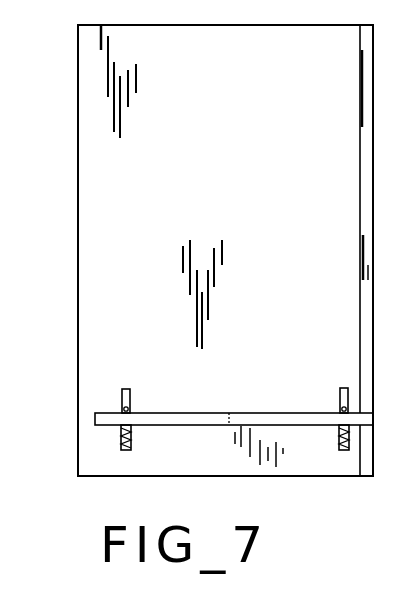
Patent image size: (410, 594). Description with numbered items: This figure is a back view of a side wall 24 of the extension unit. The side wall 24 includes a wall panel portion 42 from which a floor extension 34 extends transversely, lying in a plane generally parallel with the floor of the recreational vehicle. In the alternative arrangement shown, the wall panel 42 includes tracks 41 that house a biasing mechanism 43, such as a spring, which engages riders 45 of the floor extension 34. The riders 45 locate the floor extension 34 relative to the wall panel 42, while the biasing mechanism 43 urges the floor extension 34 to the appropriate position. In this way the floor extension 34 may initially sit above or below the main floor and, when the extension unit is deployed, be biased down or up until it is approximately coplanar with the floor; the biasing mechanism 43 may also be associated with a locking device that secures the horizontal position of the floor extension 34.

The side wall 24 is at (88, 188).
The wall panel portion 42 is at (250, 169).
The floor extension 34 is at (188, 421).
The tracks 41 is at (122, 394).
The riders 45 is at (122, 406).
The biasing mechanism 43 is at (125, 451).